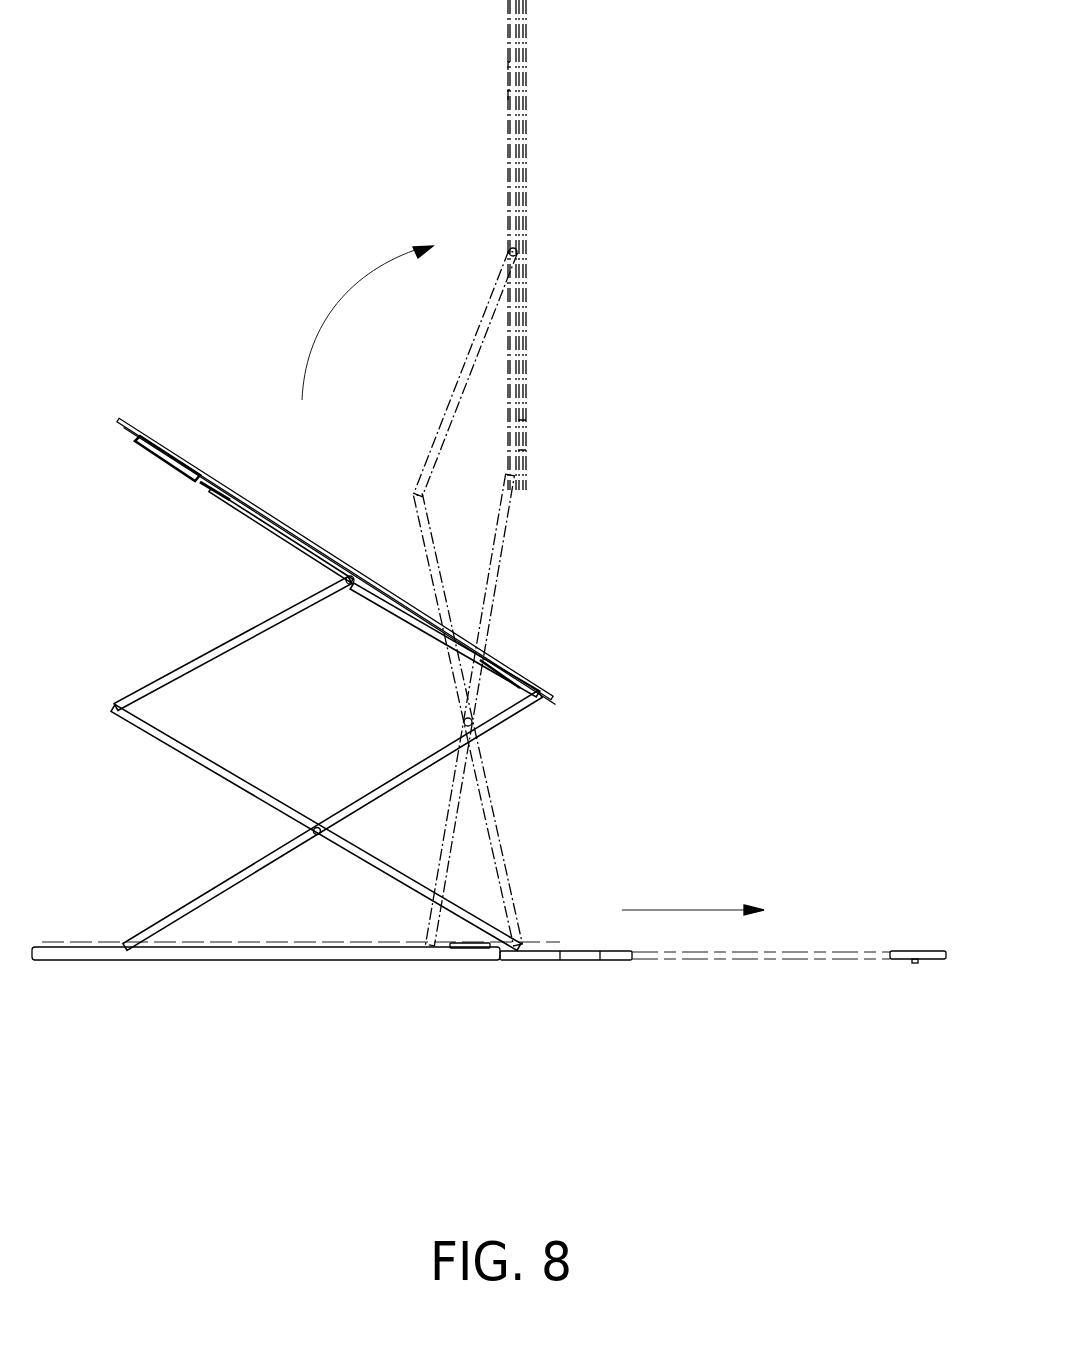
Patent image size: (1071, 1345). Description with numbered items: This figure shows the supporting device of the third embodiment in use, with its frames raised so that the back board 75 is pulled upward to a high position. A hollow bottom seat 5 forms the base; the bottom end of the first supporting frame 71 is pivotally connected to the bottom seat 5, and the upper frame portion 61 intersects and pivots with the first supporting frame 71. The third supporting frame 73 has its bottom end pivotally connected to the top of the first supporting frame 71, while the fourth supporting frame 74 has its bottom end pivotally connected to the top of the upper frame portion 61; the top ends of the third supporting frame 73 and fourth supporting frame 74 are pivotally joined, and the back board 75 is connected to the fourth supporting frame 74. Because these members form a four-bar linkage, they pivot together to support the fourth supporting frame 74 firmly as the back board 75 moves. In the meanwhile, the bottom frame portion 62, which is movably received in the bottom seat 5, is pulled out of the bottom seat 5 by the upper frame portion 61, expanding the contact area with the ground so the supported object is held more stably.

The bottom seat 5 is at (292, 962).
The upper frame portion 61 is at (212, 890).
The bottom frame portion 62 is at (775, 961).
The first supporting frame 71 is at (380, 884).
The third supporting frame 73 is at (220, 653).
The fourth supporting frame 74 is at (397, 610).
The back board 75 is at (240, 493).